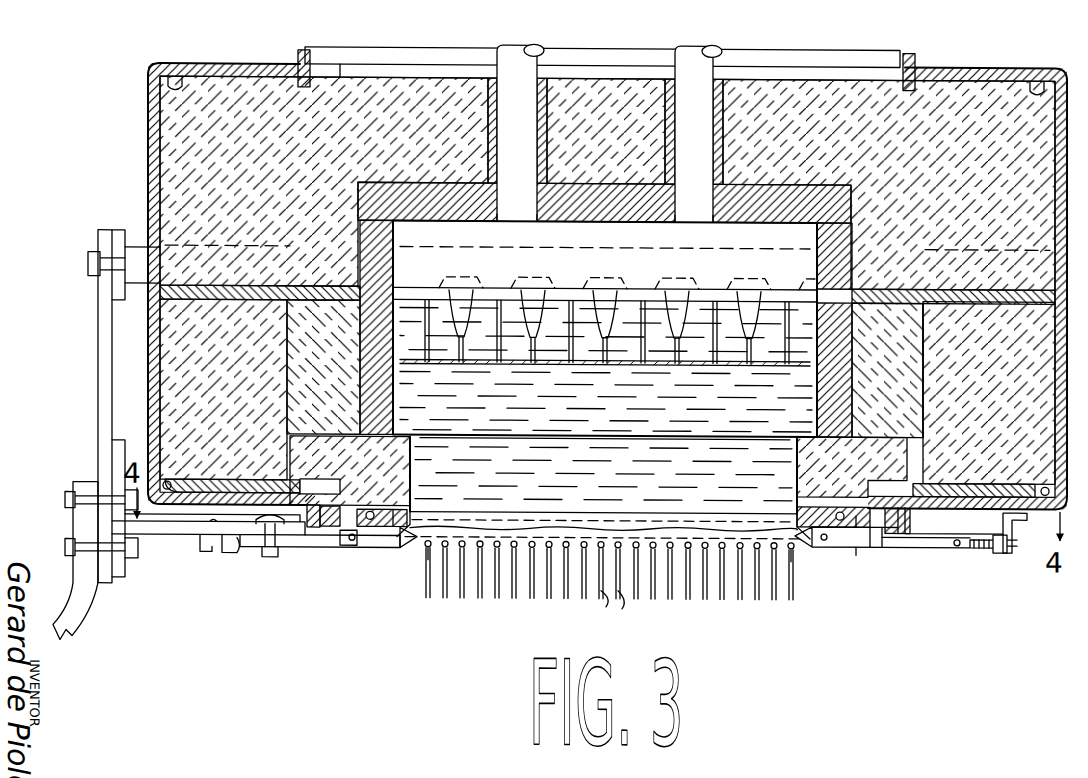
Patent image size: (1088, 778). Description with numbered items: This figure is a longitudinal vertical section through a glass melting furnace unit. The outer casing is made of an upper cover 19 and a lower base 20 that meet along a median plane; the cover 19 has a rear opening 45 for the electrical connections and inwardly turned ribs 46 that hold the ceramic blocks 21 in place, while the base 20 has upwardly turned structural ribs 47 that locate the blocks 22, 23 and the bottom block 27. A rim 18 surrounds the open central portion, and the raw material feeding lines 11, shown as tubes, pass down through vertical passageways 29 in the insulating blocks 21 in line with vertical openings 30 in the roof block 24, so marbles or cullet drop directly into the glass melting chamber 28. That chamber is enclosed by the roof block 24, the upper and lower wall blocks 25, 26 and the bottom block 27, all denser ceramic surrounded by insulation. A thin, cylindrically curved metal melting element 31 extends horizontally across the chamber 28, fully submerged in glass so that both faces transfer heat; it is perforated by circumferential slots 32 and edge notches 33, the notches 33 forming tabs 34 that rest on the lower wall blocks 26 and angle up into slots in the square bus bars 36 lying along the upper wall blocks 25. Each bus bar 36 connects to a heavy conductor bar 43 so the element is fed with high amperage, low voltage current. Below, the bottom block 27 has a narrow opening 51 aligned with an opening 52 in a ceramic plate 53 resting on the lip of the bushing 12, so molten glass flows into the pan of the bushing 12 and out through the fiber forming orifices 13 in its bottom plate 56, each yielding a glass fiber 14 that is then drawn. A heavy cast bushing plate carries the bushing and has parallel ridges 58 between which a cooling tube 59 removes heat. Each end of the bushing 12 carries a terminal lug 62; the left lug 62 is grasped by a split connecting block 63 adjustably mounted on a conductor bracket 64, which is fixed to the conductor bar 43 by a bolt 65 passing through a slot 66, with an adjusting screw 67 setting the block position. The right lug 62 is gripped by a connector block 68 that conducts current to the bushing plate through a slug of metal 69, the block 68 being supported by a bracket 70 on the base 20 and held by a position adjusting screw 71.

The raw material feeding lines 11 is at (722, 58).
The bushing 12 is at (507, 548).
The fiber forming orifices 13 is at (430, 546).
The glass filament or fiber 14 is at (625, 598).
The rim 18 is at (880, 50).
The upper cover 19 is at (148, 90).
The lower base 20 is at (1060, 427).
The insulating blocks 21 is at (1055, 153).
The insulating blocks 22 is at (1055, 377).
The insulating blocks 23 is at (923, 357).
The roof block 24 is at (780, 181).
The upper wall blocks 25 is at (853, 254).
The lower wall blocks 26 is at (852, 406).
The bottom block 27 is at (790, 449).
The glass melting chamber 28 is at (475, 398).
The vertical passageways 29 is at (553, 78).
The vertical openings 30 is at (500, 214).
The melting element 31 is at (590, 364).
The slots 32 is at (793, 364).
The notches 33 is at (534, 328).
The tabs 34 is at (606, 328).
The bus bar 36 is at (393, 230).
The conductor bar 43 is at (100, 405).
The rear opening 45 is at (155, 180).
The inwardly turned ribs 46 is at (190, 87).
The upwardly turned structural ribs 47 is at (190, 479).
The narrow opening 51 is at (748, 439).
The opening 52 is at (528, 512).
The ceramic plate 53 is at (410, 512).
The bottom plate 56 is at (792, 530).
The parallel ridges 58 is at (862, 544).
The cooling tube 59 is at (372, 510).
The terminal lug 62 is at (408, 544).
The split connecting block 63 is at (328, 547).
The conductor bracket 64 is at (175, 537).
The bolt 65 is at (271, 557).
The slot 66 is at (254, 522).
The adjusting screw 67 is at (222, 549).
The connector block 68 is at (878, 546).
The slug of metal 69 is at (908, 525).
The bracket 70 is at (1010, 525).
The position adjusting screw 71 is at (978, 546).